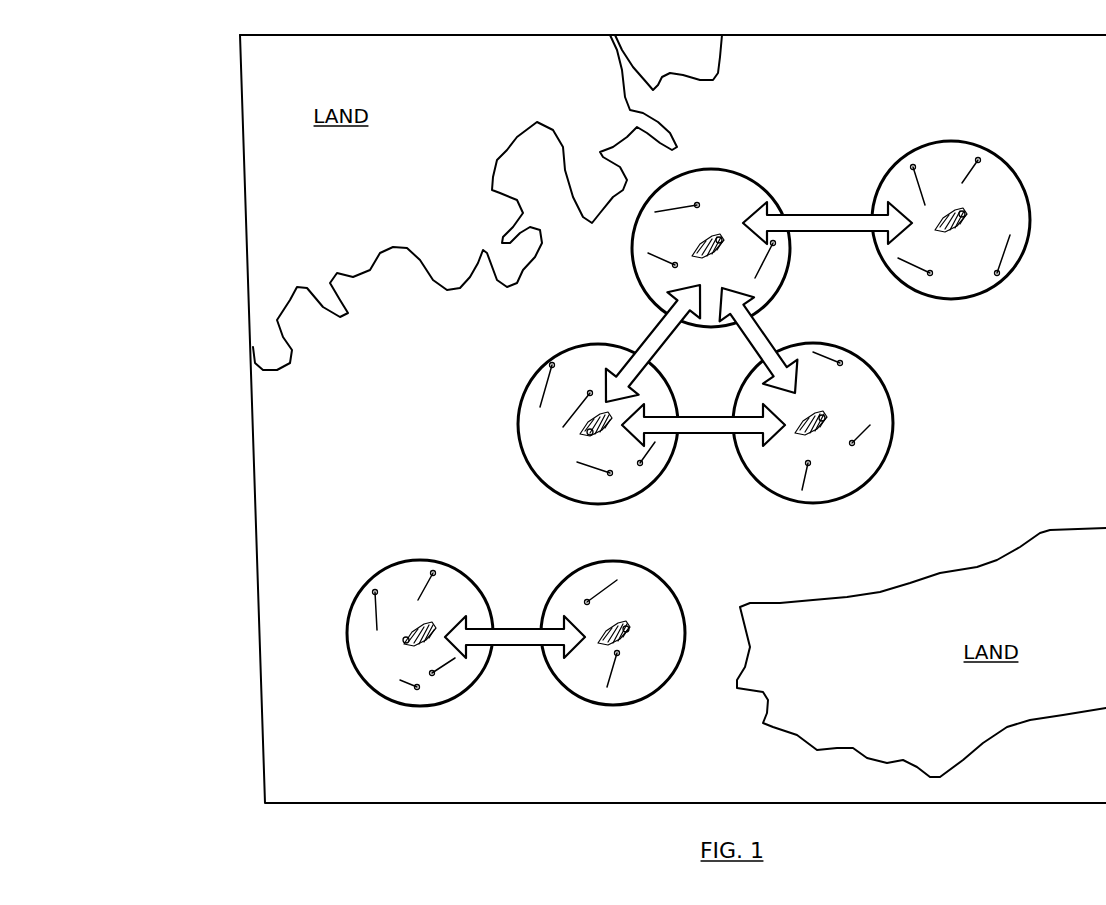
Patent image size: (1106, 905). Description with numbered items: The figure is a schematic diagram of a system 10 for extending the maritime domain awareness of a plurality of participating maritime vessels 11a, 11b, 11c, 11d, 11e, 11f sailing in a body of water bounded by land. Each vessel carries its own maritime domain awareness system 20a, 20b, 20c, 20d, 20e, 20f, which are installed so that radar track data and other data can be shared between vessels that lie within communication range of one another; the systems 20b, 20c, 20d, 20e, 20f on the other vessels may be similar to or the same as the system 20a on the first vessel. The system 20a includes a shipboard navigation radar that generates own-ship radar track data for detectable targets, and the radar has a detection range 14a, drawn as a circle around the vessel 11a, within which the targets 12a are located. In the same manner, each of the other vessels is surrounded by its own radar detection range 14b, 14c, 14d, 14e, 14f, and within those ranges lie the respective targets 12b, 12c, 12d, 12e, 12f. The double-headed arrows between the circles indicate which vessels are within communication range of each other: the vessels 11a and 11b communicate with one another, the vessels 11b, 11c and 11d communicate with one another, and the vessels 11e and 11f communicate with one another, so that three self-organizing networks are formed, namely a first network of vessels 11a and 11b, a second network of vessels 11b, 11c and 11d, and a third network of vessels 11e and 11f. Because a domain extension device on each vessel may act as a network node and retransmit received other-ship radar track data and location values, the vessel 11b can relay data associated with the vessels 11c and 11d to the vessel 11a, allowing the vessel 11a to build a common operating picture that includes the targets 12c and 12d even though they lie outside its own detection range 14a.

The system for extending maritime domain awareness 10 is at (214, 94).
The maritime vessel 11a is at (1026, 208).
The maritime vessel 11b is at (723, 240).
The maritime vessel 11c is at (823, 413).
The maritime vessel 11d is at (588, 433).
The maritime vessel 11e is at (403, 645).
The maritime vessel 11f is at (623, 623).
The targets 12a is at (978, 158).
The targets 12b is at (771, 247).
The targets 12c is at (812, 466).
The targets 12d is at (641, 466).
The targets 12e is at (419, 689).
The targets 12f is at (607, 689).
The detection range 14a is at (997, 284).
The detection range 14b is at (636, 273).
The detection range 14c is at (796, 500).
The detection range 14d is at (583, 503).
The detection range 14e is at (413, 560).
The detection range 14f is at (677, 667).
The maritime domain awareness system 20a is at (967, 210).
The maritime domain awareness system 20b is at (727, 237).
The maritime domain awareness system 20c is at (830, 425).
The maritime domain awareness system 20d is at (589, 434).
The maritime domain awareness system 20e is at (404, 643).
The maritime domain awareness system 20f is at (632, 632).